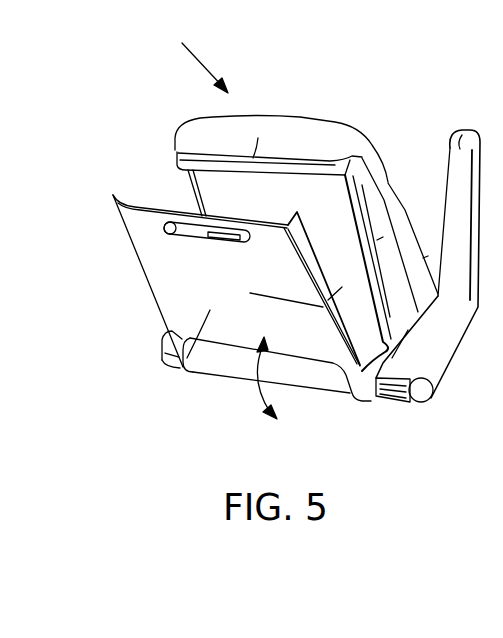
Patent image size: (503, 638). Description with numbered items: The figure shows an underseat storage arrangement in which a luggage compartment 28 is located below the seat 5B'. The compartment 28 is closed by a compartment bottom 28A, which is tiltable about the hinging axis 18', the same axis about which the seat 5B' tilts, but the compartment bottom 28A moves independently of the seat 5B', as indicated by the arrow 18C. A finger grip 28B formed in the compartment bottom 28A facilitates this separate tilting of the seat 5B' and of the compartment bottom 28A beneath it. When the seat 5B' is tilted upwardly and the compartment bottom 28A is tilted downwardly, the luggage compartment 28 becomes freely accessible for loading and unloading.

The seat 5B' is at (188, 63).
The luggage compartment 28 is at (358, 222).
The compartment bottom 28A is at (185, 364).
The finger grip 28B is at (180, 232).
The arrow 18C is at (235, 384).
The hinging axis 18' is at (428, 301).